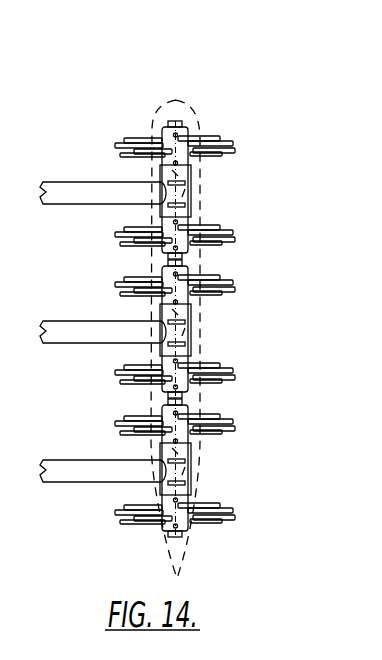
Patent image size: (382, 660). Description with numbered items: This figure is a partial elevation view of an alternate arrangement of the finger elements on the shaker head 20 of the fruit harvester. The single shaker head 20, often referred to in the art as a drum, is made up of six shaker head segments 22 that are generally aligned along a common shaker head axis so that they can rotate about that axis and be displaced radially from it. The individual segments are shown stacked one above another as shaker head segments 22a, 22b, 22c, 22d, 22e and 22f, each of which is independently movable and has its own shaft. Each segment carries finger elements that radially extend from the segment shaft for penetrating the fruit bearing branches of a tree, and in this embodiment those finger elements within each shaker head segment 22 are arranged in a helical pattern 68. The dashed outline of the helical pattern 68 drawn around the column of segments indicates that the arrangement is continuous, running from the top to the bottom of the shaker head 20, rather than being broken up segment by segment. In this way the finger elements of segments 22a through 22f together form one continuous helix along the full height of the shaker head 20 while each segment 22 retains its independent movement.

The shaker head 20 is at (159, 307).
The shaker head segments 22 is at (151, 305).
The shaker head segment 22a is at (130, 152).
The shaker head segment 22b is at (128, 233).
The shaker head segment 22c is at (128, 291).
The shaker head segment 22d is at (130, 376).
The shaker head segment 22e is at (128, 435).
The shaker head segment 22f is at (128, 515).
The helical pattern 68 is at (212, 198).